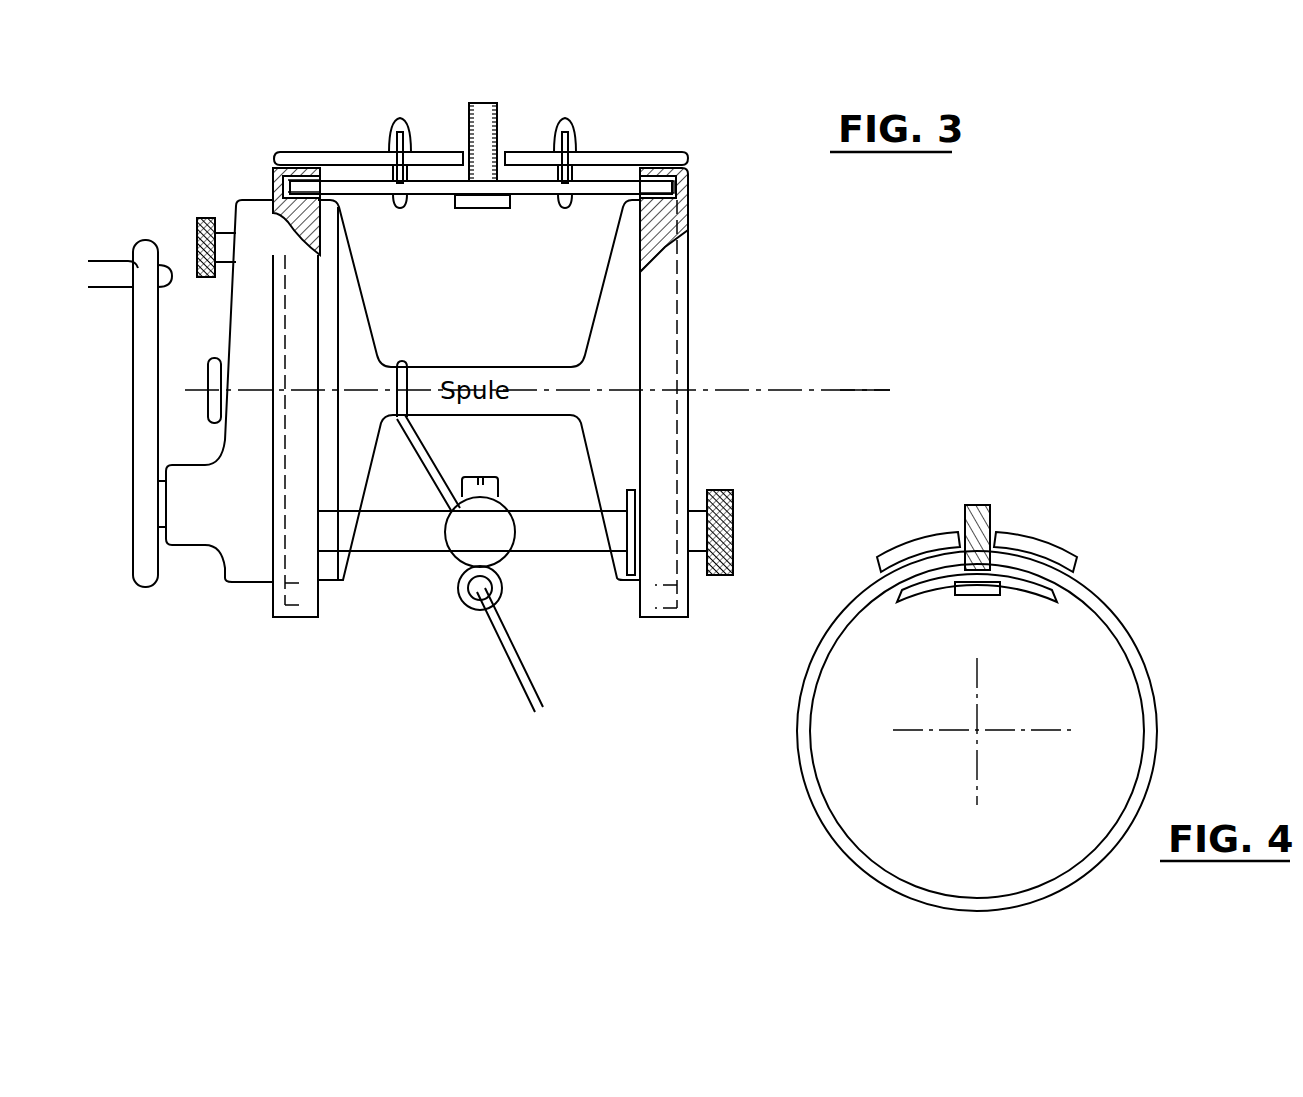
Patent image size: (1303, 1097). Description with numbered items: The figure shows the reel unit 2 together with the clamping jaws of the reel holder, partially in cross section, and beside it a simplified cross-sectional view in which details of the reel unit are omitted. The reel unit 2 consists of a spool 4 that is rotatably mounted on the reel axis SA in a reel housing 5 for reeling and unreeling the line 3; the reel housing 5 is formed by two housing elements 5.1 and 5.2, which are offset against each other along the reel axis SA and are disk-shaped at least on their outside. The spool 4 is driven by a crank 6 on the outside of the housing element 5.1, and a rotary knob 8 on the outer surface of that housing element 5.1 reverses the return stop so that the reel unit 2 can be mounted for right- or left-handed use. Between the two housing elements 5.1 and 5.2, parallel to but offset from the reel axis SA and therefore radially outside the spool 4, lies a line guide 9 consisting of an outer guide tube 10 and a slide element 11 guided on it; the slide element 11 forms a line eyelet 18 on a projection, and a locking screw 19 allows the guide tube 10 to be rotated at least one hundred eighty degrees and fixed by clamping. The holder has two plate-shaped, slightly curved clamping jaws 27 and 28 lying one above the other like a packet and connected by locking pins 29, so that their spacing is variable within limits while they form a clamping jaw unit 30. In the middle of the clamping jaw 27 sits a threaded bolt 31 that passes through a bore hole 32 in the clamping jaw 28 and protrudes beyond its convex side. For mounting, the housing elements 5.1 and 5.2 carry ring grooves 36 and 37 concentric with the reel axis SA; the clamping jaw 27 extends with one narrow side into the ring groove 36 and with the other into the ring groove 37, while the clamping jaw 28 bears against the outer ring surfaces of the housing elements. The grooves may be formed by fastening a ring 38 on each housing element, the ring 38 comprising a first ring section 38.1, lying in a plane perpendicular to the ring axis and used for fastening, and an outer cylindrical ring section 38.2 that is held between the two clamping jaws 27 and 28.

In FIG. 3, the reel unit 2 is at (748, 327).
In FIG. 4, the reel unit 2 is at (1085, 496).
In FIG. 3, the line 3 is at (517, 657).
In FIG. 3, the spool 4 is at (352, 302).
In FIG. 3, the reel housing 5 is at (694, 297).
In FIG. 3, the housing element 5.1 is at (298, 573).
In FIG. 3, the housing element 5.2 is at (665, 433).
In FIG. 3, the crank 6 is at (145, 333).
In FIG. 3, the rotary knob 8 is at (203, 218).
In FIG. 3, the line guide 9 is at (463, 622).
In FIG. 3, the guide tube 10 is at (527, 525).
In FIG. 3, the slide element 11 is at (493, 515).
In FIG. 3, the line eyelet 18 is at (470, 591).
In FIG. 3, the locking screw 19 is at (735, 507).
In FIG. 3, the clamping jaw 27 is at (432, 192).
In FIG. 4, the clamping jaw 27 is at (1017, 585).
In FIG. 3, the clamping jaw 28 is at (580, 153).
In FIG. 4, the clamping jaw 28 is at (917, 545).
In FIG. 3, the locking pins 29 is at (407, 180).
In FIG. 3, the clamping jaw unit 30 is at (584, 99).
In FIG. 3, the threaded bolt 31 is at (479, 118).
In FIG. 4, the threaded bolt 31 is at (982, 505).
In FIG. 3, the bore hole 32 is at (513, 157).
In FIG. 4, the bore hole 32 is at (1000, 532).
In FIG. 3, the ring groove 36 is at (320, 178).
In FIG. 3, the ring groove 37 is at (647, 170).
In FIG. 3, the ring 38 is at (696, 197).
In FIG. 4, the ring 38 is at (1142, 654).
In FIG. 3, the first ring section 38.1 is at (280, 505).
In FIG. 3, the outer cylindrical ring section 38.2 is at (272, 168).
In FIG. 4, the outer cylindrical ring section 38.2 is at (1105, 615).
In FIG. 3, the reel axis SA is at (865, 393).